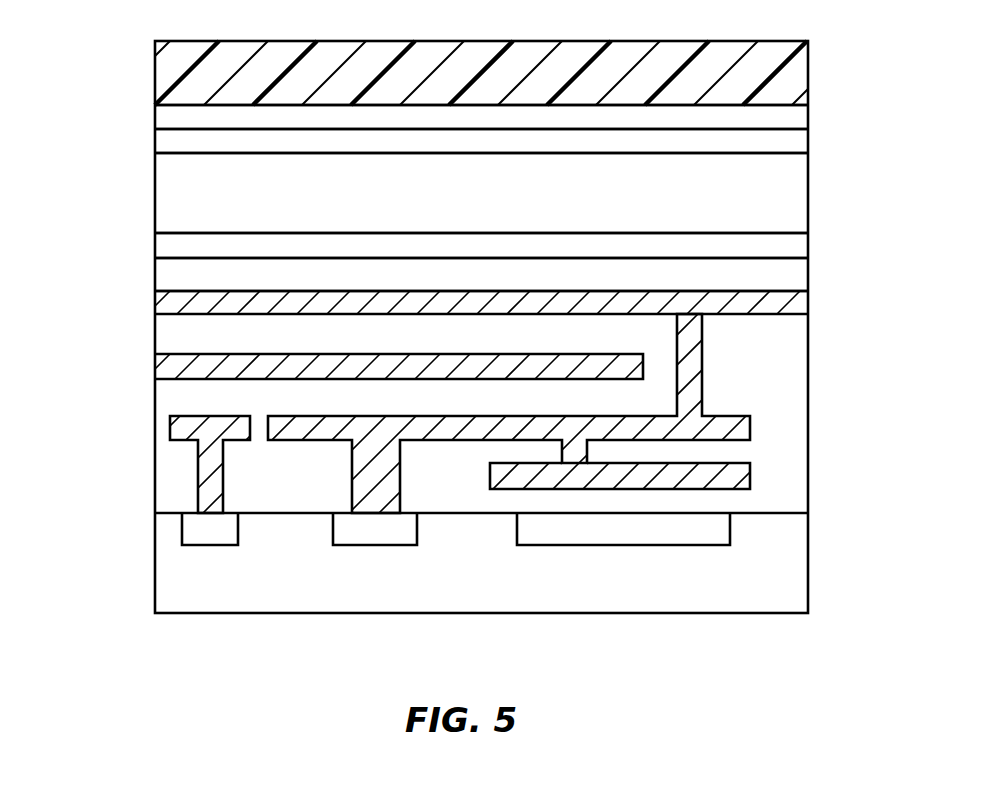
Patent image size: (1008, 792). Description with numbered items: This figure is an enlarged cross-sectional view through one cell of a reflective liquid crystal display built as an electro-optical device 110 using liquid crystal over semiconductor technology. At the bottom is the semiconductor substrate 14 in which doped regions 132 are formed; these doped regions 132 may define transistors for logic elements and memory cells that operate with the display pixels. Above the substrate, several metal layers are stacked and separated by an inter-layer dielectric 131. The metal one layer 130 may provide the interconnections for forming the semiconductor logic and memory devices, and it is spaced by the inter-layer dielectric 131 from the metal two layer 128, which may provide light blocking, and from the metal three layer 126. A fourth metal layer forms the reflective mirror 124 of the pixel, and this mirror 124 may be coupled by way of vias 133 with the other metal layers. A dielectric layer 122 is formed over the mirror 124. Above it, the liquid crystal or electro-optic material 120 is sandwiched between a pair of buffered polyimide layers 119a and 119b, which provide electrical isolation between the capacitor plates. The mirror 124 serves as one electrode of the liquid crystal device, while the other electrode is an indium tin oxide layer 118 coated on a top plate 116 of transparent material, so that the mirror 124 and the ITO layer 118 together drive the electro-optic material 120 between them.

The electro-optical device 110 is at (127, 128).
The top plate 116 is at (808, 53).
The indium tin oxide (ITO) layer 118 is at (808, 118).
The buffered polyimide layer 119a is at (808, 148).
The liquid crystal material 120 is at (808, 197).
The buffered polyimide layer 119b is at (808, 245).
The dielectric layer 122 is at (808, 280).
The reflective mirror 124 is at (808, 312).
The metal three layer 126 is at (155, 362).
The metal two layer 128 is at (752, 423).
The metal one layer 130 is at (752, 477).
The inter-layer dielectric (ILD) 131 is at (155, 411).
The doped regions 132 is at (187, 532).
The vias 133 is at (703, 390).
The substrate 14 is at (498, 594).